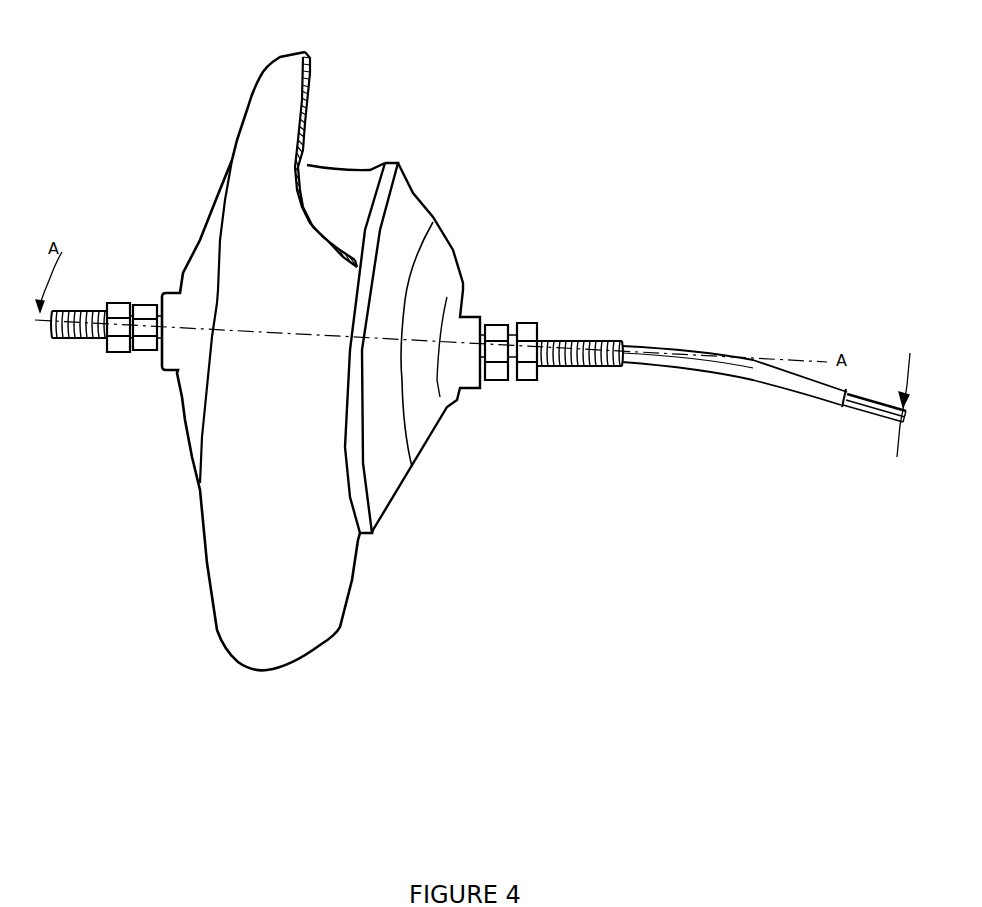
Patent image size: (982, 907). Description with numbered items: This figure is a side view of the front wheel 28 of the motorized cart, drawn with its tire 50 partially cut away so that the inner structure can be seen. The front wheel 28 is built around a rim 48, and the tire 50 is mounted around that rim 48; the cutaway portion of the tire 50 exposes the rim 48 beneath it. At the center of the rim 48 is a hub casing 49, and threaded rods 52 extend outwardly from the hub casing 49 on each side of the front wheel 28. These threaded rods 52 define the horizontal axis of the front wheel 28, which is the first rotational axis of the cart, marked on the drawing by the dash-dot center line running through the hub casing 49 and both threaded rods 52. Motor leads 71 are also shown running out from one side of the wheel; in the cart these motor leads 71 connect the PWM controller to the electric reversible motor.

The front wheel 28 is at (437, 110).
The rim 48 is at (343, 167).
The hub casing 49 is at (428, 202).
The tire 50 is at (338, 628).
The threaded rods 52 is at (88, 315).
The motor leads 71 is at (875, 408).